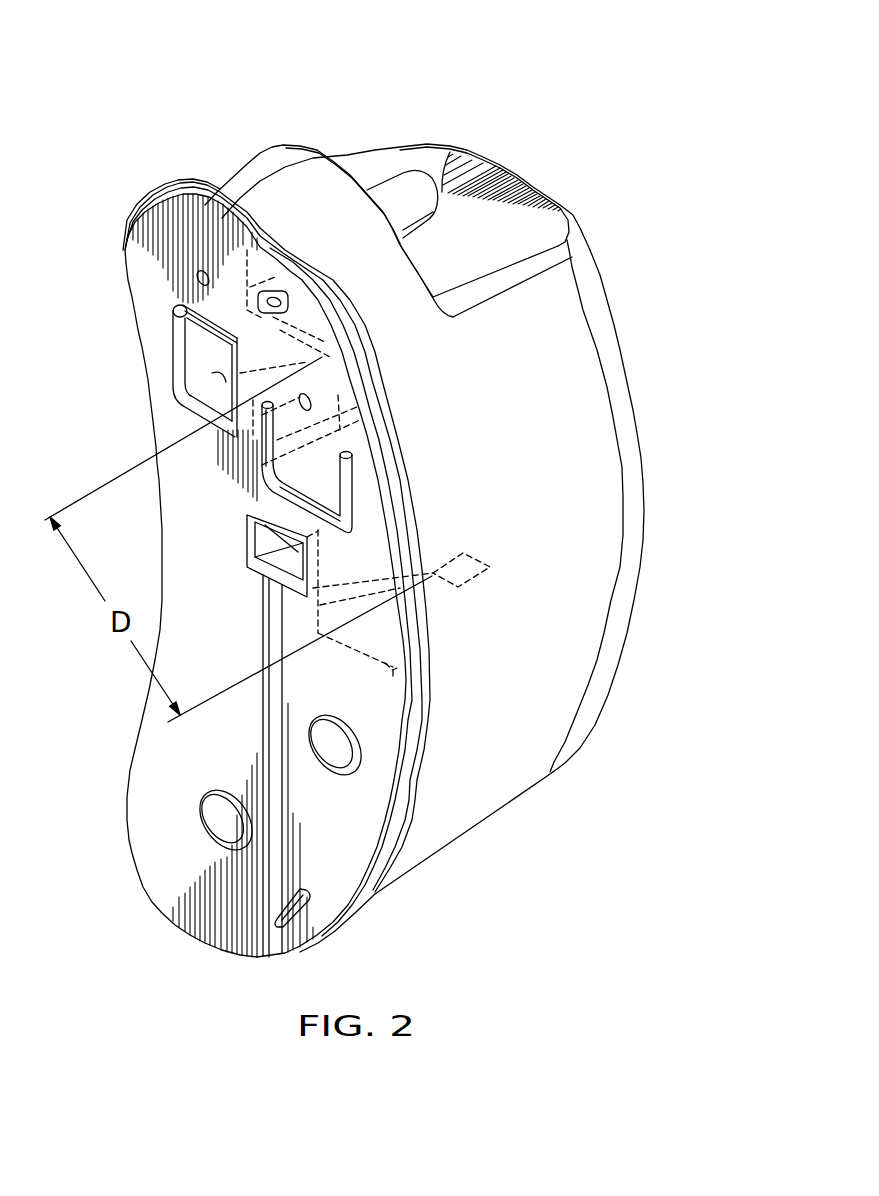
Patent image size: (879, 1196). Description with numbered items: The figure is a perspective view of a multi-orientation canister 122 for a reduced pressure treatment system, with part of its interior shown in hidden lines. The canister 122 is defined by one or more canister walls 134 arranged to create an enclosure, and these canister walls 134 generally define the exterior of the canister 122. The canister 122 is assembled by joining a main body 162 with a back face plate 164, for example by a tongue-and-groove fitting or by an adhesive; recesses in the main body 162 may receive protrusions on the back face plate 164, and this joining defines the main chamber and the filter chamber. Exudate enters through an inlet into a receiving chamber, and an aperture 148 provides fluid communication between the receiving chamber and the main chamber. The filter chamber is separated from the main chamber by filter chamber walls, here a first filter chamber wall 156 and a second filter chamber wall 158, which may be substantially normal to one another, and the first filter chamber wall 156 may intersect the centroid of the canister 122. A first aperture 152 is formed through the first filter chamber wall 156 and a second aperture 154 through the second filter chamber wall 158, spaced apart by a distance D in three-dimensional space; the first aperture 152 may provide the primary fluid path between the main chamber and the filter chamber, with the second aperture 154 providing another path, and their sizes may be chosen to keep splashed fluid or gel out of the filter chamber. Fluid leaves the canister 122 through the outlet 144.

The canister 122 is at (526, 75).
The canister walls 134 is at (598, 410).
The outlet 144 is at (309, 400).
The aperture 148 is at (270, 287).
The first aperture 152 is at (473, 577).
The second aperture 154 is at (310, 362).
The first filter chamber wall 156 is at (357, 647).
The second filter chamber wall 158 is at (270, 358).
The main body 162 is at (455, 843).
The back face plate 164 is at (163, 887).